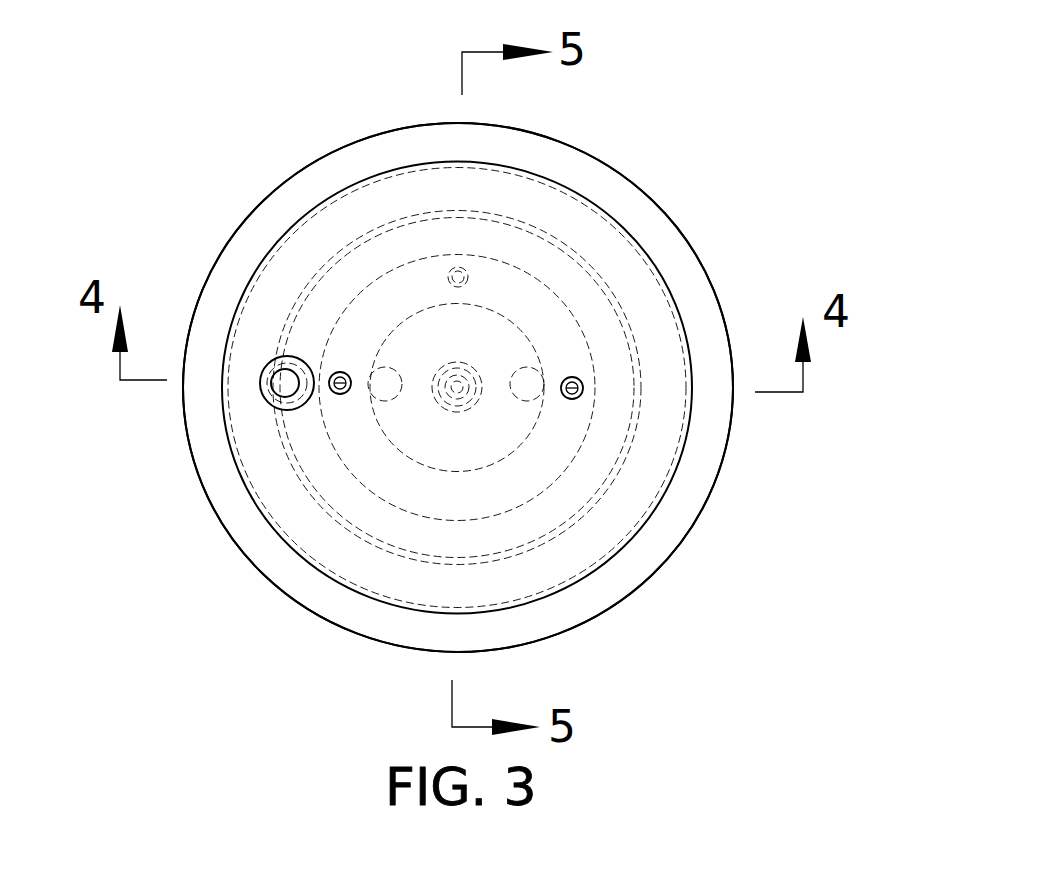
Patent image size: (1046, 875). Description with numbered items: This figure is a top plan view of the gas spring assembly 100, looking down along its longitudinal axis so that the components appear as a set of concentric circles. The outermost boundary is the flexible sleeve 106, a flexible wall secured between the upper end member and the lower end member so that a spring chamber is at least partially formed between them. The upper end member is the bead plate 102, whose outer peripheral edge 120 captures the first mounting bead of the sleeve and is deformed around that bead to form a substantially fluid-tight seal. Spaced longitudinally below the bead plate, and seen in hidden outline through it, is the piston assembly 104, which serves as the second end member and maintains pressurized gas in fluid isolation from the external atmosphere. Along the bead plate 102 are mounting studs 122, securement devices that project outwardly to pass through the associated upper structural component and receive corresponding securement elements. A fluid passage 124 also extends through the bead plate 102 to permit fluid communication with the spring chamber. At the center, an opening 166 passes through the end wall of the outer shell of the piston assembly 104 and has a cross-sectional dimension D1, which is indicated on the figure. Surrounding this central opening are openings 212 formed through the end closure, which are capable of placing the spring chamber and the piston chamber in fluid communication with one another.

The gas spring assembly 100 is at (700, 165).
The bead plate 102 is at (552, 193).
The piston assembly 104 is at (567, 556).
The flexible sleeve 106 is at (710, 243).
The outer peripheral edge 120 is at (355, 182).
The mounting studs 122 is at (320, 408).
The fluid passage 124 is at (250, 391).
The opening 166 is at (430, 355).
The openings 212 is at (373, 377).
The cross-sectional dimension D1 is at (416, 430).